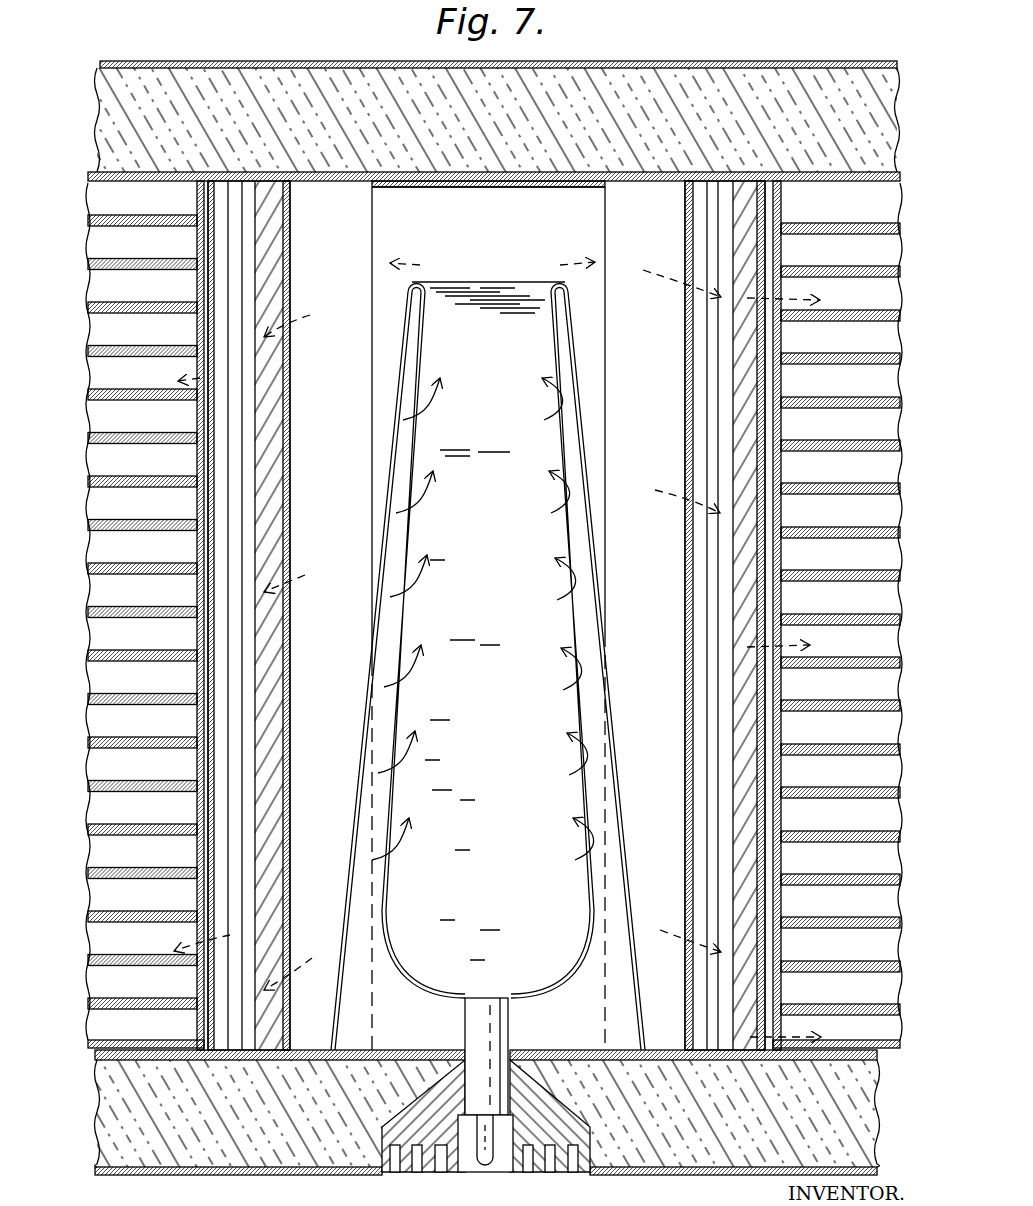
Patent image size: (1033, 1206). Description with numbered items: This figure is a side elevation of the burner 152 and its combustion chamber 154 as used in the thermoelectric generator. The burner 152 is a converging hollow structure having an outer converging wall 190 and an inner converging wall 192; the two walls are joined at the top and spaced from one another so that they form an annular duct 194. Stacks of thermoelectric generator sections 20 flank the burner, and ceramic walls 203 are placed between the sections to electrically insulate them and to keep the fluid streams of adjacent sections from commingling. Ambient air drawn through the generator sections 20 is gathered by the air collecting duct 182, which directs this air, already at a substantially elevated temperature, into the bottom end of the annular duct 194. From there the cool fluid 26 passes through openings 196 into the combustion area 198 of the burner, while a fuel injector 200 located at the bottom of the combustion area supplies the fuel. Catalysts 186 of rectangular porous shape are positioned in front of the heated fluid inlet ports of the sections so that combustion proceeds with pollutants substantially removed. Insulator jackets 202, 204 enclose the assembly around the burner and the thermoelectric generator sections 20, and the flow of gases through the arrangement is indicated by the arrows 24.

The burner 152 is at (427, 150).
The insulator jacket 204 is at (690, 80).
The thermoelectric generator section 20 is at (486, 615).
The ceramic wall 203 is at (101, 609).
The catalyst 186 is at (258, 212).
The air collecting duct 182 is at (387, 220).
The combustion chamber 154 is at (522, 237).
The flow arrows of heated gas 24 is at (430, 262).
The outer converging wall 190 is at (610, 714).
The inner converging wall 192 is at (400, 697).
The duct 194 is at (585, 641).
The opening 196 is at (568, 588).
The combustion area 198 is at (512, 585).
The cool fluid 26 is at (397, 855).
The fuel injector 200 is at (477, 1023).
The insulator jacket 202 is at (253, 1147).